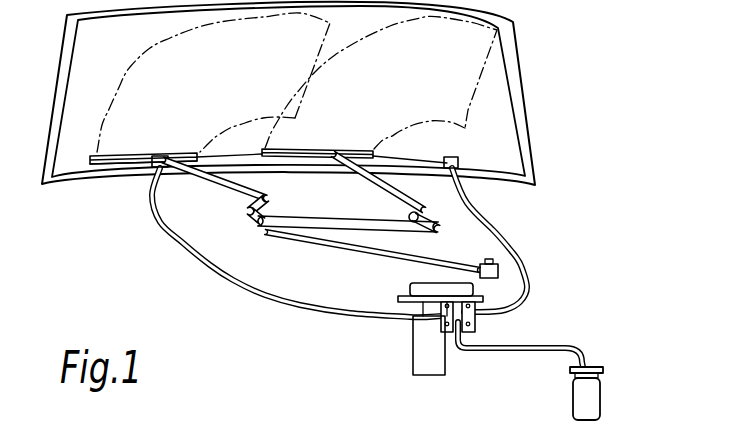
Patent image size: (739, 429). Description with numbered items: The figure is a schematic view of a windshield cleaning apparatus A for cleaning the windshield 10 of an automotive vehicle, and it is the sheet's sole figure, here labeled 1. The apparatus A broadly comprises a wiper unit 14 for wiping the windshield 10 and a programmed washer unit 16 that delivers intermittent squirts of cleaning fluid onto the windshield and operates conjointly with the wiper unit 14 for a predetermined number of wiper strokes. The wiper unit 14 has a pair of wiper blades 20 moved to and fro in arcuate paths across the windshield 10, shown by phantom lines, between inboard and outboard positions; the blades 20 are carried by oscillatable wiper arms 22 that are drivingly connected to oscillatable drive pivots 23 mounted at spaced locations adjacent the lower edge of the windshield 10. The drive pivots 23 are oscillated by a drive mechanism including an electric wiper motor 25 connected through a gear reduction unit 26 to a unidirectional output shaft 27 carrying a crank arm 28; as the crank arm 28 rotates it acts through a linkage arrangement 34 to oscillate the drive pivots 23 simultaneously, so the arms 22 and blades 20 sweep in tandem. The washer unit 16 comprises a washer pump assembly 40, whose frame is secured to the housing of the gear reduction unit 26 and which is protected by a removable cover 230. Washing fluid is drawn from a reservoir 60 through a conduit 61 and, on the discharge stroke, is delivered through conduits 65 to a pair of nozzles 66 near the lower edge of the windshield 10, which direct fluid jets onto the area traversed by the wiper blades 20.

The vehicle windshield wiper installation 1 is at (90, 167).
The windshield 10 is at (323, 43).
The wiper unit 14 is at (362, 257).
The programmed washer unit 16 is at (534, 318).
The wiper blades 20 is at (122, 154).
The wiper arms 22 is at (197, 181).
The drive pivots 23 is at (266, 208).
The electric wiper motor 25 is at (415, 340).
The gear reduction unit 26 is at (406, 289).
The output shaft 27 is at (440, 262).
The crank arm 28 is at (494, 285).
The linkage arrangement 34 is at (322, 239).
The washer pump assembly 40 is at (476, 325).
The reservoir 60 is at (599, 406).
The conduit 61 is at (566, 347).
The conduits 65 is at (183, 245).
The nozzles 66 is at (162, 156).
The removable cover 230 is at (448, 345).
The windshield cleaning apparatus A is at (582, 181).